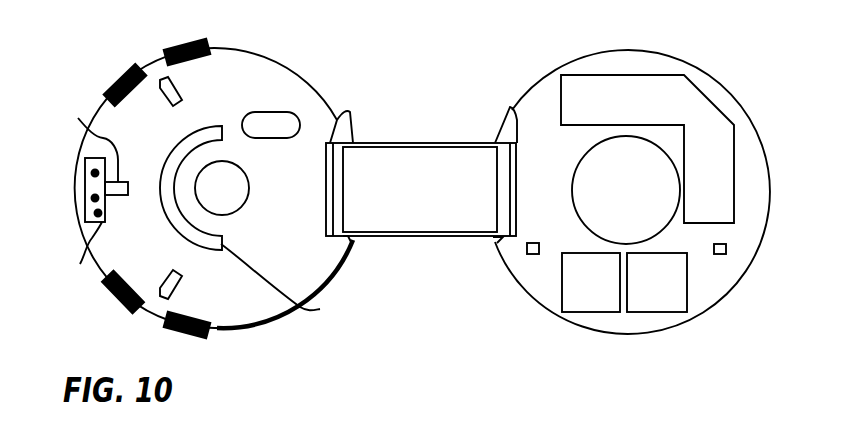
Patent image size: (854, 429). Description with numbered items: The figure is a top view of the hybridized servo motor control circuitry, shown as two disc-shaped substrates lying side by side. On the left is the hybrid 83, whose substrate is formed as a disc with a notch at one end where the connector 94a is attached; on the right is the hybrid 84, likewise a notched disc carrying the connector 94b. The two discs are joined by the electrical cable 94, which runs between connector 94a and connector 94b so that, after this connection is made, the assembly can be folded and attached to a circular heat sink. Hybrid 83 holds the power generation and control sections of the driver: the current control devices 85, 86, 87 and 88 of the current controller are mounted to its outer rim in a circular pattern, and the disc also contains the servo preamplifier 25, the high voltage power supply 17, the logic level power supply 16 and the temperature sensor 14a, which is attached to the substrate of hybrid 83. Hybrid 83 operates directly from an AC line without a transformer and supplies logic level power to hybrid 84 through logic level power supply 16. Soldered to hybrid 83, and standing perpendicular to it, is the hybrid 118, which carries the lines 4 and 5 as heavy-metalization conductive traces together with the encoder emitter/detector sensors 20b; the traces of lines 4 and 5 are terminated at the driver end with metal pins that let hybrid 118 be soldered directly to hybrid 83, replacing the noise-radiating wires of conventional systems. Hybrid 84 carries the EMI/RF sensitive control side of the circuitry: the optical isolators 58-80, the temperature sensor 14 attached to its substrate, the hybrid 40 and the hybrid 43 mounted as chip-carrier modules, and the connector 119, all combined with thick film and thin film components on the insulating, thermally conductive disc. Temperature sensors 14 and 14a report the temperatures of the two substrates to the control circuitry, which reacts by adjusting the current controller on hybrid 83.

The line 4 is at (90, 170).
The line 5 is at (78, 190).
The temperature sensor 14 is at (527, 248).
The temperature sensor 14a is at (178, 92).
The logic level power supply 16 is at (272, 112).
The high voltage power supply 17 is at (248, 182).
The encoder emitter/detector sensors 20b is at (83, 163).
The servo preamplifier 25 is at (282, 282).
The hybrid 40 is at (602, 286).
The hybrid 43 is at (666, 286).
The optical isolators 58-80 is at (687, 97).
The hybrid 83 is at (252, 318).
The hybrid 84 is at (707, 288).
The current control device 85 is at (177, 339).
The current control device 86 is at (113, 297).
The current control device 87 is at (117, 79).
The current control device 88 is at (177, 43).
The electrical cable 94 is at (437, 197).
The connector 94a is at (350, 113).
The connector 94b is at (511, 108).
The hybrid 118 is at (78, 250).
The connector 119 is at (639, 197).